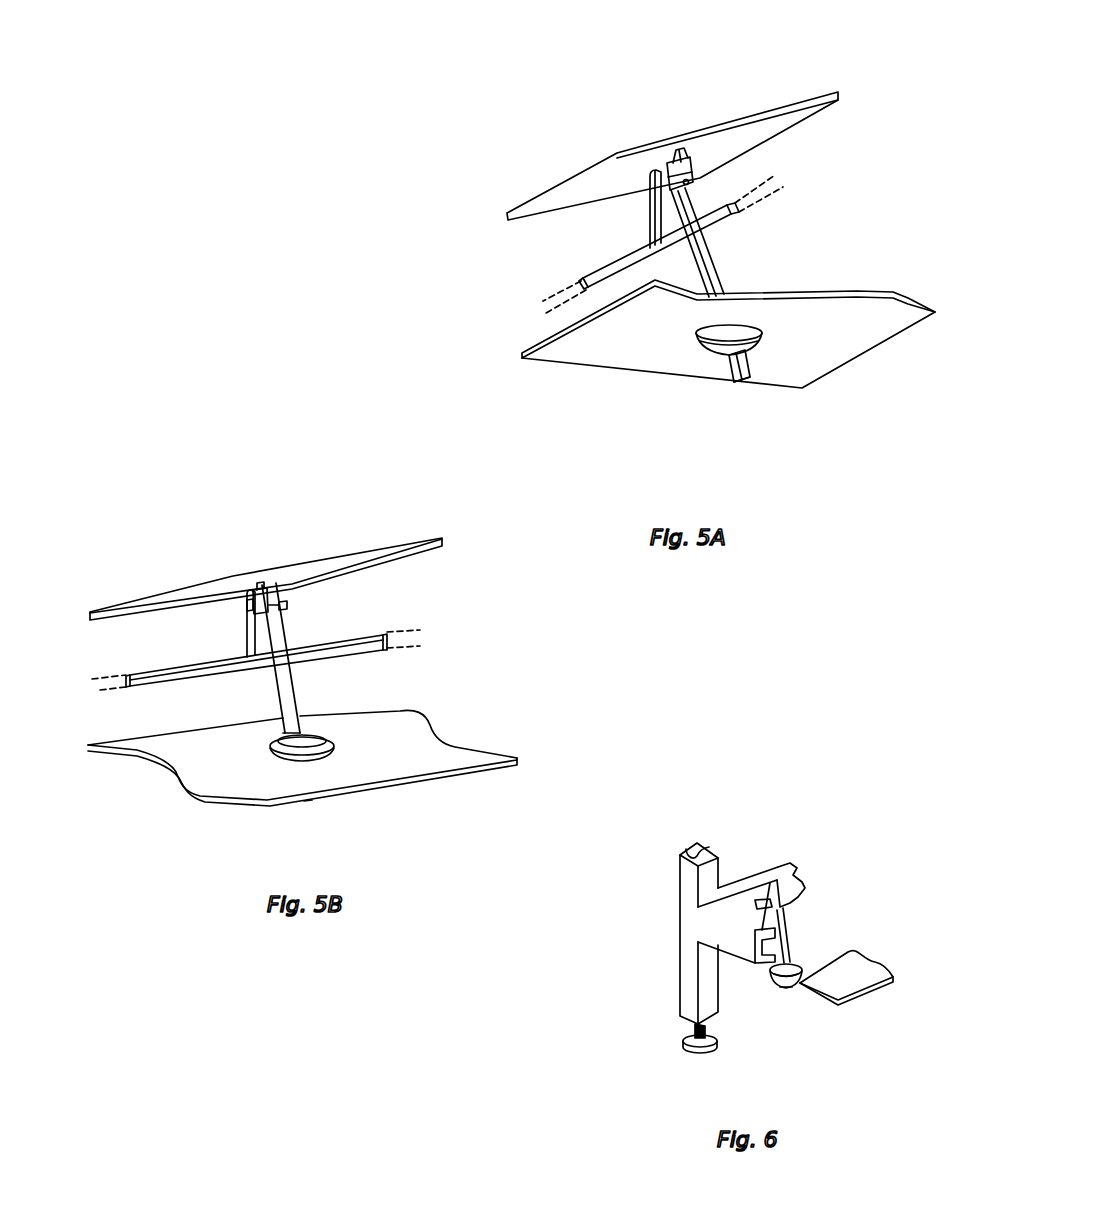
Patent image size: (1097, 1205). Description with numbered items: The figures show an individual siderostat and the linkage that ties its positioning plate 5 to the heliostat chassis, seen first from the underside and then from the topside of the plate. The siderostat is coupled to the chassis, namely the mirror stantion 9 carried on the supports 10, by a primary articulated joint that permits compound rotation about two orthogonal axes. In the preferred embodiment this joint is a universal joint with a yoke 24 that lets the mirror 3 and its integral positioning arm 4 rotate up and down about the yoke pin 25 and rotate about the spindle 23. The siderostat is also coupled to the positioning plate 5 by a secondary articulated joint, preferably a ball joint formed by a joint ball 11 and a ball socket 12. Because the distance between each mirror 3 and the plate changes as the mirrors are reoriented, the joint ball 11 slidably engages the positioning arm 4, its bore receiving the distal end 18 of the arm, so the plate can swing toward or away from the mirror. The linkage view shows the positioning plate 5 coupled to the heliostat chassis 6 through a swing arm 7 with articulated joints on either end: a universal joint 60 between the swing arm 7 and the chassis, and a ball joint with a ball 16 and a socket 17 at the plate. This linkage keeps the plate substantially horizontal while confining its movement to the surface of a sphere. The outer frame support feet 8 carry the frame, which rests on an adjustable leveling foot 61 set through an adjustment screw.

In FIG. 5A, the mirror 3 is at (585, 175).
In FIG. 5B, the mirror 3 is at (333, 558).
In FIG. 5A, the positioning arm 4 is at (709, 259).
In FIG. 5B, the positioning arm 4 is at (282, 673).
In FIG. 5A, the positioning plate 5 is at (620, 328).
In FIG. 5B, the positioning plate 5 is at (212, 747).
In FIG. 6, the positioning plate 5 is at (850, 960).
In FIG. 6, the heliostat chassis 6 is at (755, 880).
In FIG. 6, the swing arm 7 is at (793, 913).
In FIG. 6, the outer frame support feet 8 is at (688, 970).
In FIG. 5A, the stantion 9 is at (650, 206).
In FIG. 5B, the stantion 9 is at (250, 635).
In FIG. 5A, the supports 10 is at (612, 265).
In FIG. 5B, the supports 10 is at (387, 645).
In FIG. 5A, the joint ball 11 is at (718, 353).
In FIG. 5B, the joint ball 11 is at (310, 735).
In FIG. 5A, the ball socket 12 is at (703, 340).
In FIG. 5B, the ball socket 12 is at (330, 750).
In FIG. 6, the ball 16 is at (793, 958).
In FIG. 6, the socket 17 is at (779, 987).
In FIG. 5A, the distal end 18 is at (746, 377).
In FIG. 5B, the distal end 18 is at (310, 801).
In FIG. 5A, the spindle 23 is at (650, 183).
In FIG. 5B, the spindle 23 is at (287, 605).
In FIG. 5A, the yoke 24 is at (672, 177).
In FIG. 5B, the yoke 24 is at (245, 608).
In FIG. 5A, the yoke pin 25 is at (694, 180).
In FIG. 5B, the yoke pin 25 is at (252, 606).
In FIG. 6, the universal joint 60 is at (797, 870).
In FIG. 6, the adjustable leveling foot 61 is at (680, 1043).